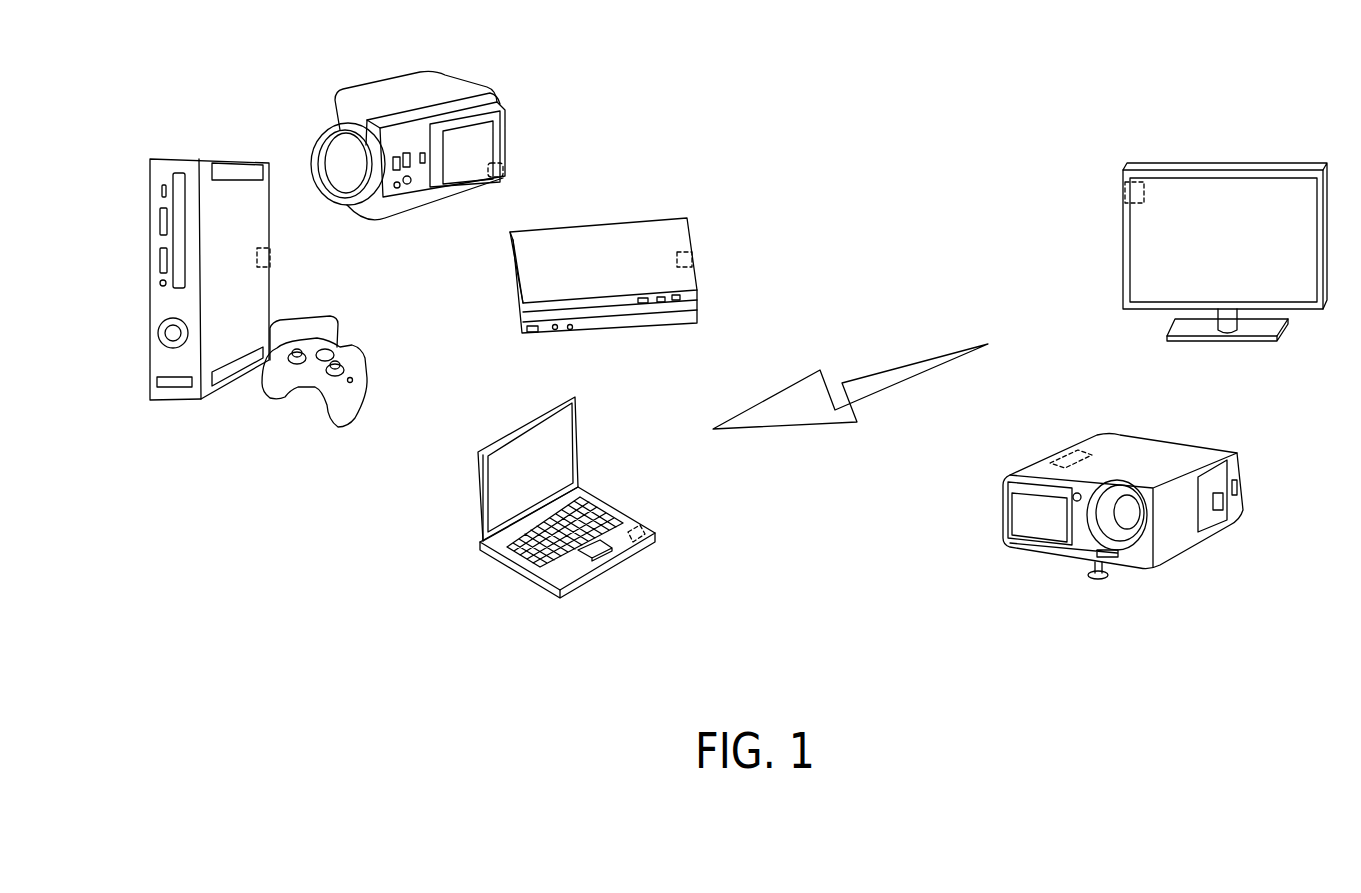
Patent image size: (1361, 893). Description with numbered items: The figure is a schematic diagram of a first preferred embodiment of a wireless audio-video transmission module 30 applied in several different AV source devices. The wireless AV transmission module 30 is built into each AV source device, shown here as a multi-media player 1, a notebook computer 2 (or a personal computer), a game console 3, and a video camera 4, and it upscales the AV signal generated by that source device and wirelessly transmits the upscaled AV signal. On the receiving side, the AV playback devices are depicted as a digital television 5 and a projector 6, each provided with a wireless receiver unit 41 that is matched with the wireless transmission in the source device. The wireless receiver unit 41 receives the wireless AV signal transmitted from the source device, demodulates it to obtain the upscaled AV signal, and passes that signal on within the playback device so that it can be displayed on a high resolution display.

The multi-media player 1 is at (643, 233).
The notebook computer 2 is at (537, 582).
The game console 3 is at (228, 163).
The video camera 4 is at (470, 85).
The digital television 5 is at (1217, 168).
The projector 6 is at (1185, 537).
The wireless audio-video transmission module 30 is at (270, 257).
The wireless receiver unit 41 is at (1123, 193).